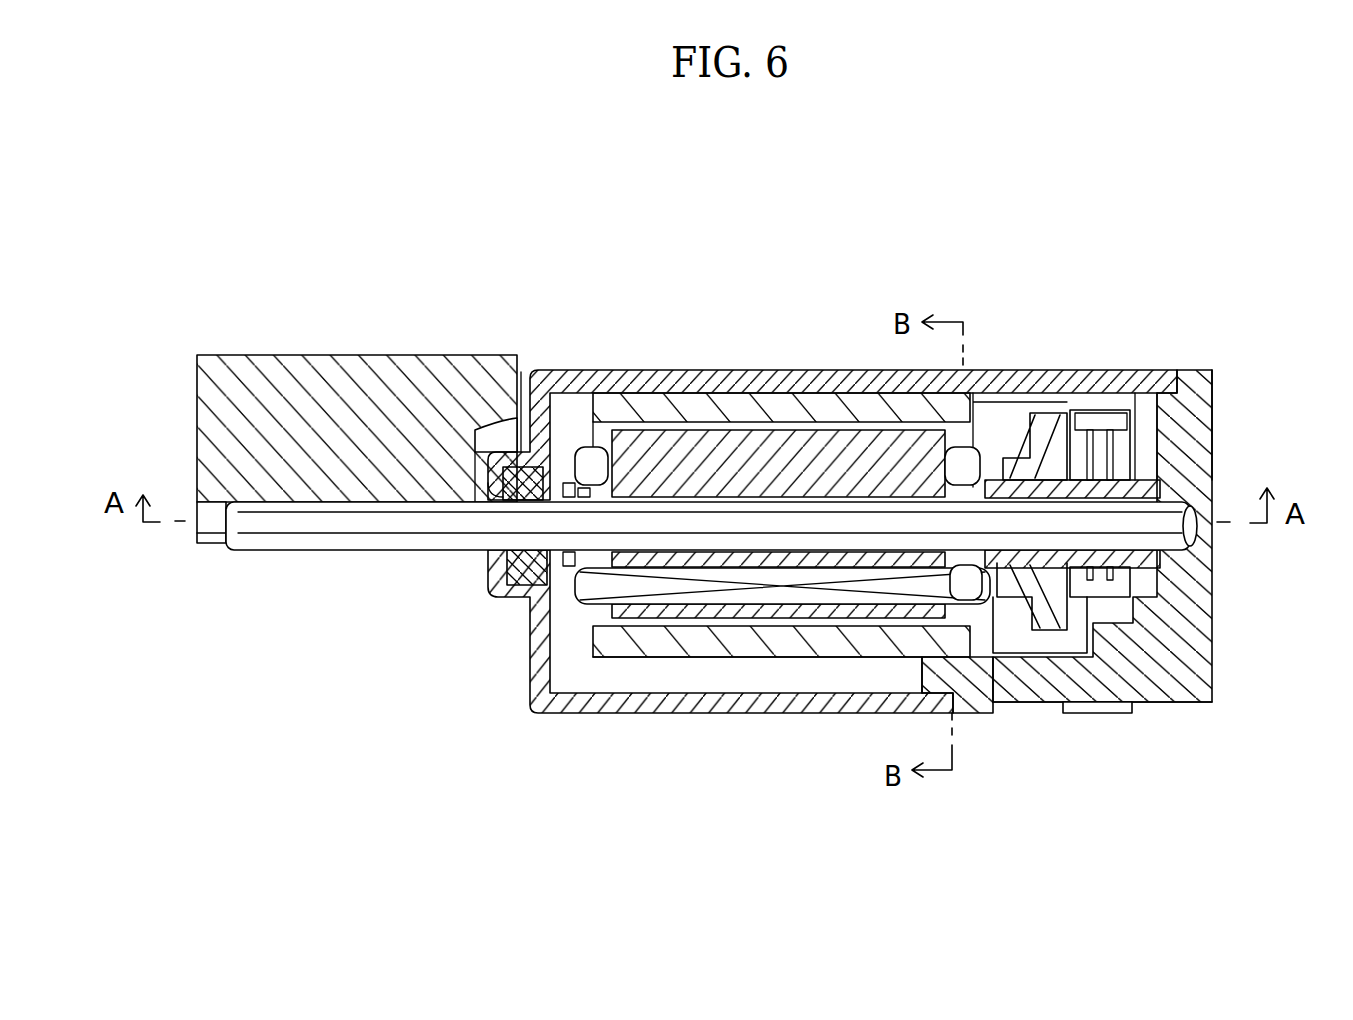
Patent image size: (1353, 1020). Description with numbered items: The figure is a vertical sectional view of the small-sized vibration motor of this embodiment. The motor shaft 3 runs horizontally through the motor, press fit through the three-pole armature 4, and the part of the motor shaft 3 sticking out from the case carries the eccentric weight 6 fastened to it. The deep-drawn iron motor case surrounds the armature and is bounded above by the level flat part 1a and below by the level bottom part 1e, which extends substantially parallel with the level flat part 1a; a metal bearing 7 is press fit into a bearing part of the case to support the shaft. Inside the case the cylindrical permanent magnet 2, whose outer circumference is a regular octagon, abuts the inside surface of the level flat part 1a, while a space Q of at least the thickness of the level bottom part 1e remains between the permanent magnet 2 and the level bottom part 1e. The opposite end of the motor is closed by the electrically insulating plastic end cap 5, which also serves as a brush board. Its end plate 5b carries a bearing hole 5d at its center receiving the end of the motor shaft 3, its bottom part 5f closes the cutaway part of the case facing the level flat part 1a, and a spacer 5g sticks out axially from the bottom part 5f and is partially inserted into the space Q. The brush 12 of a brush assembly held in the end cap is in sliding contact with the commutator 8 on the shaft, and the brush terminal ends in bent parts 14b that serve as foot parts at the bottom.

The level flat part 1a is at (760, 370).
The level bottom part 1e is at (732, 712).
The cylindrical permanent magnet 2 is at (661, 655).
The motor shaft 3 is at (353, 542).
The three-pole armature 4 is at (713, 424).
The plastic end cap 5 is at (1226, 609).
The end plate 5b is at (1207, 403).
The bearing hole 5d is at (1140, 553).
The bottom part 5f is at (1168, 690).
The spacer 5g is at (958, 703).
The eccentric weight 6 is at (392, 356).
The metal bearing 7 is at (512, 585).
The commutator 8 is at (1140, 482).
The brush 12 is at (1123, 452).
The bent parts 14b is at (1093, 714).
The space Q is at (822, 670).